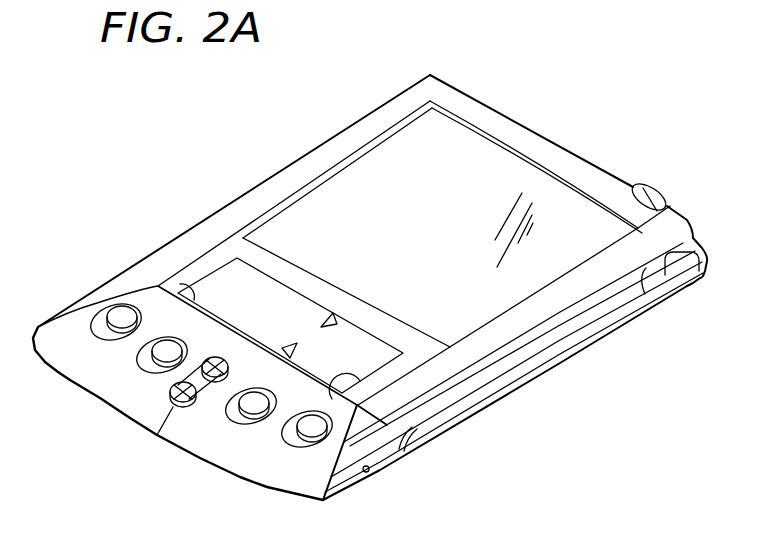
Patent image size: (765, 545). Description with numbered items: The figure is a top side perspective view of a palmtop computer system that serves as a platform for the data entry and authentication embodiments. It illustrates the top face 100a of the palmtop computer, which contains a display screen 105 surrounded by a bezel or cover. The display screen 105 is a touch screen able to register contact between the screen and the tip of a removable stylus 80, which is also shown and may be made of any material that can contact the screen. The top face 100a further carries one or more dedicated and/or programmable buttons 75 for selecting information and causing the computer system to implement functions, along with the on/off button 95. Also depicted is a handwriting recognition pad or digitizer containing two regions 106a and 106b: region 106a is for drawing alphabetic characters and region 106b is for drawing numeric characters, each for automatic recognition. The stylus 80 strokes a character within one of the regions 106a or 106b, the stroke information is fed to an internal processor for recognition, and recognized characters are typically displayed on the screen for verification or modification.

The top face 100a is at (199, 94).
The buttons 75 is at (122, 313).
The stylus 80 is at (538, 362).
The on/off button 95 is at (663, 192).
The display screen 105 is at (447, 167).
The region 106a is at (267, 300).
The region 106b is at (347, 352).